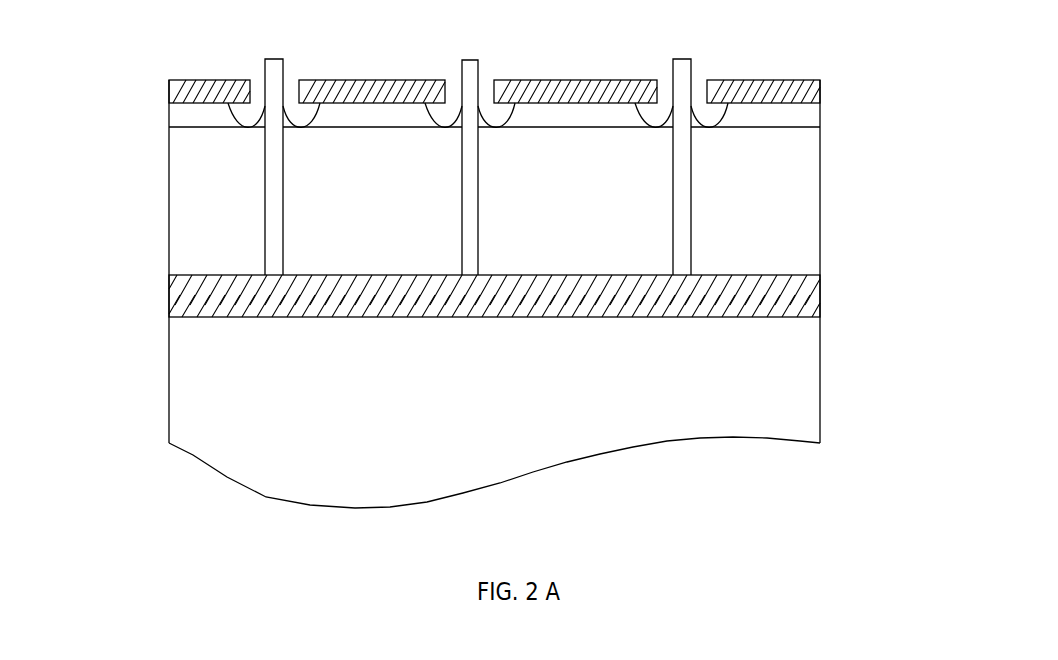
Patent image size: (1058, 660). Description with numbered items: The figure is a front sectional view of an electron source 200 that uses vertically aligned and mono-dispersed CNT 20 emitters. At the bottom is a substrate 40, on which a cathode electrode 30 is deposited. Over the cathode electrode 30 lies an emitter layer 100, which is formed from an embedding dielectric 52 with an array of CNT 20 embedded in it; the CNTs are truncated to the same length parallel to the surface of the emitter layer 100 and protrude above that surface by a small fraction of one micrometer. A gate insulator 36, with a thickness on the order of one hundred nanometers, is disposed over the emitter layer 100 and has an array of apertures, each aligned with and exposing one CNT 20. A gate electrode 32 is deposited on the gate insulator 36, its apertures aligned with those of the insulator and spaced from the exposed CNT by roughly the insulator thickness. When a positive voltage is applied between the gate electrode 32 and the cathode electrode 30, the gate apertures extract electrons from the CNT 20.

The CNT 20 is at (470, 72).
The cathode electrode 30 is at (563, 305).
The gate electrode 32 is at (762, 90).
The gate insulator 36 is at (803, 112).
The substrate 40 is at (513, 443).
The embedding dielectric 52 is at (188, 187).
The emitter layer 100 is at (864, 210).
The electron source 200 is at (93, 280).